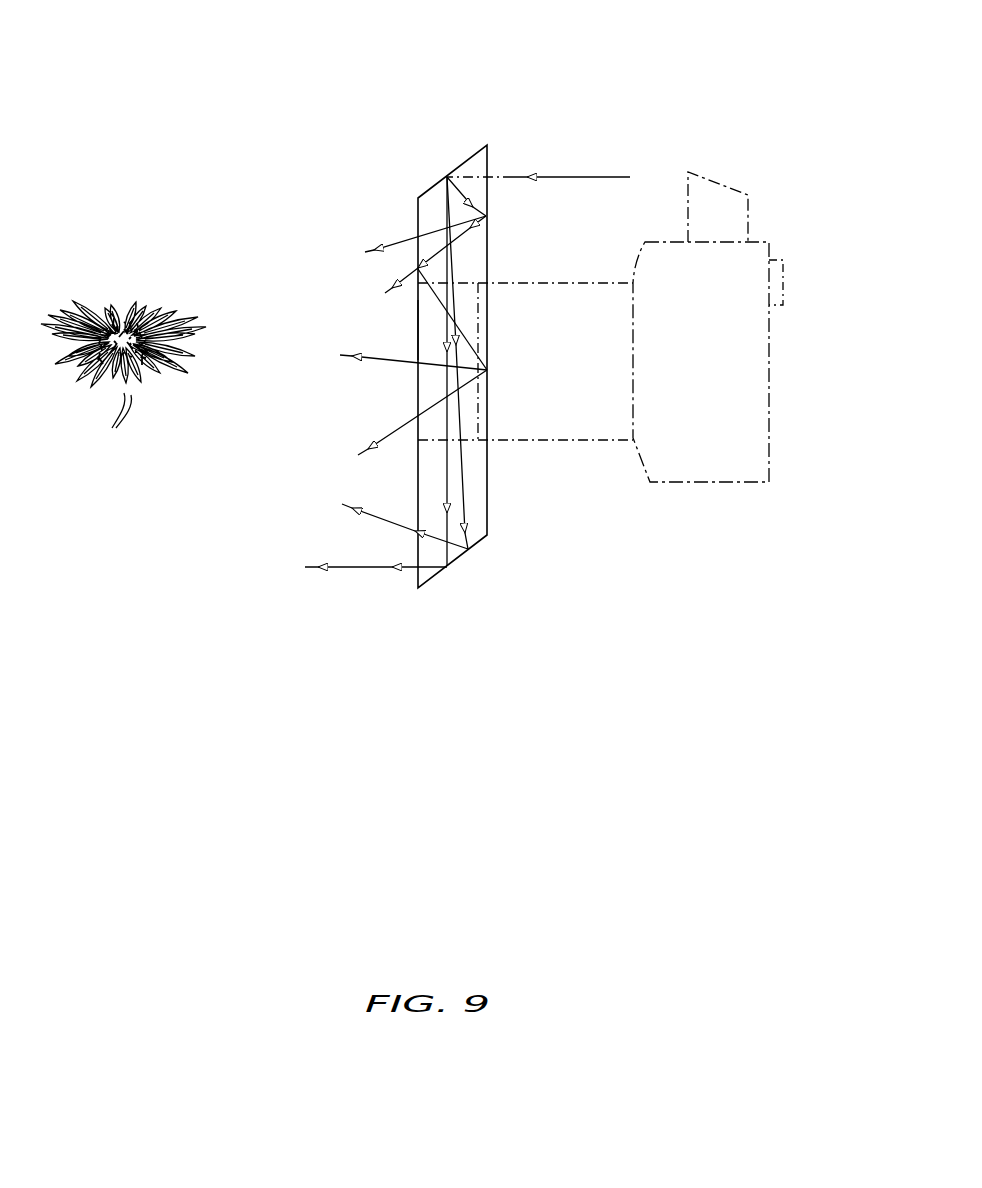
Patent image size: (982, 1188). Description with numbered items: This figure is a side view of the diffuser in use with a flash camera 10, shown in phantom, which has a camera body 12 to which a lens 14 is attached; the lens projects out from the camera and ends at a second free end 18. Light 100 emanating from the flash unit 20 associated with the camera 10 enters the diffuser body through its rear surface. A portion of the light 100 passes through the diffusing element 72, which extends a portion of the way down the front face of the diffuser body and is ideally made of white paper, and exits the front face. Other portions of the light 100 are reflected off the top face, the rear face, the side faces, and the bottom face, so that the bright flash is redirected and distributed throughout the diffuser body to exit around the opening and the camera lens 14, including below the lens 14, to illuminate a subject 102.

The flash camera 10 is at (655, 128).
The camera body 12 is at (748, 383).
The lens 14 is at (530, 300).
The second free end 18 is at (477, 312).
The flash unit 20 is at (725, 199).
The diffusing element 72 is at (459, 165).
The light 100 is at (570, 177).
The subject 102 is at (123, 300).